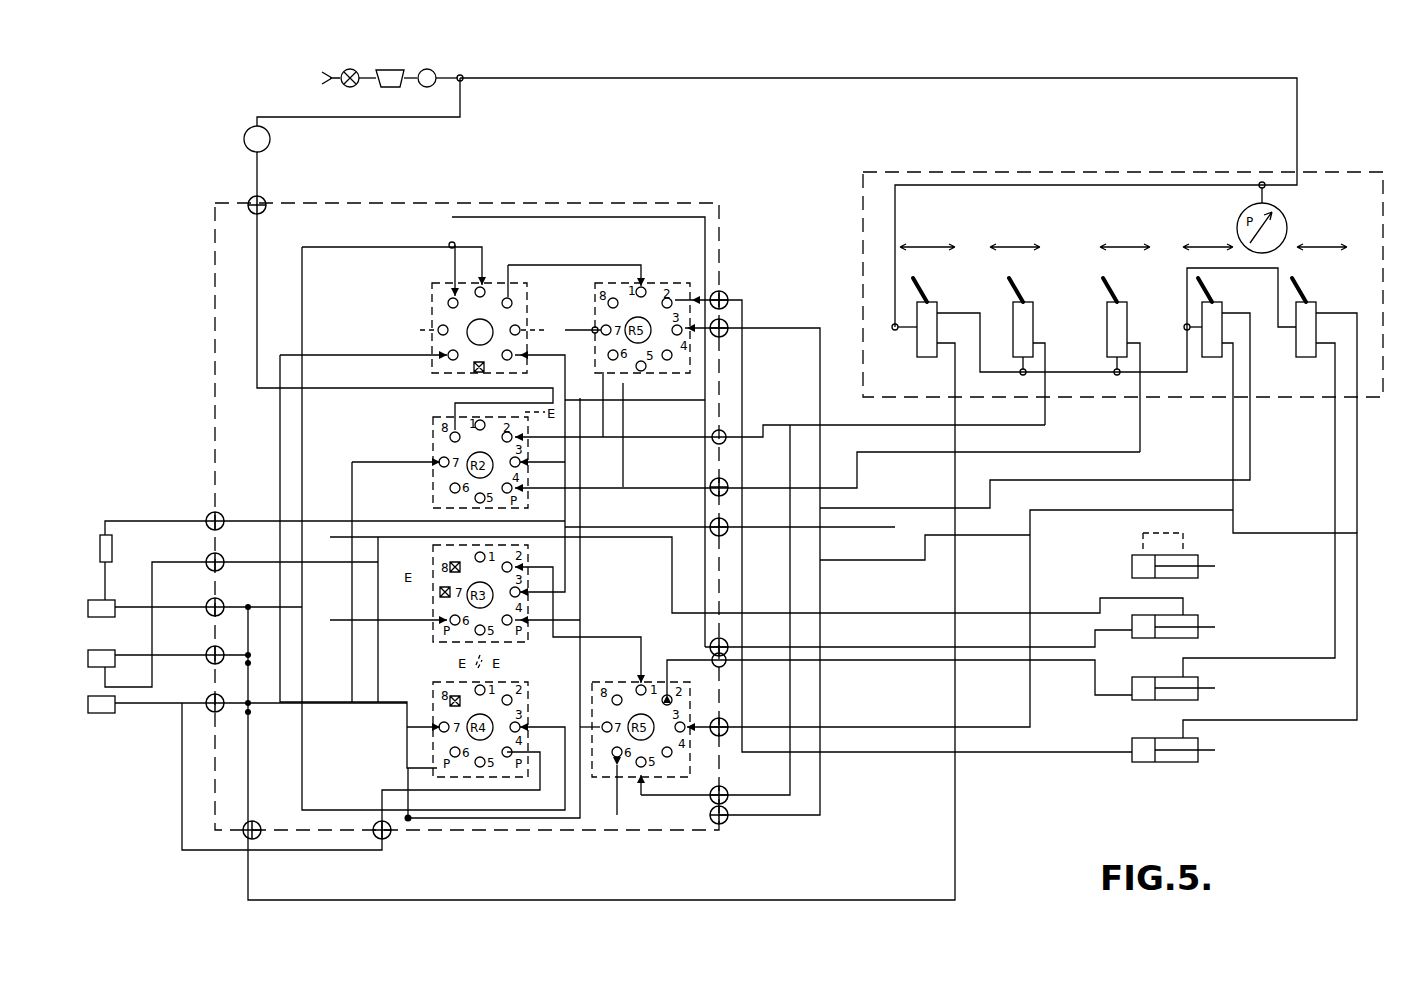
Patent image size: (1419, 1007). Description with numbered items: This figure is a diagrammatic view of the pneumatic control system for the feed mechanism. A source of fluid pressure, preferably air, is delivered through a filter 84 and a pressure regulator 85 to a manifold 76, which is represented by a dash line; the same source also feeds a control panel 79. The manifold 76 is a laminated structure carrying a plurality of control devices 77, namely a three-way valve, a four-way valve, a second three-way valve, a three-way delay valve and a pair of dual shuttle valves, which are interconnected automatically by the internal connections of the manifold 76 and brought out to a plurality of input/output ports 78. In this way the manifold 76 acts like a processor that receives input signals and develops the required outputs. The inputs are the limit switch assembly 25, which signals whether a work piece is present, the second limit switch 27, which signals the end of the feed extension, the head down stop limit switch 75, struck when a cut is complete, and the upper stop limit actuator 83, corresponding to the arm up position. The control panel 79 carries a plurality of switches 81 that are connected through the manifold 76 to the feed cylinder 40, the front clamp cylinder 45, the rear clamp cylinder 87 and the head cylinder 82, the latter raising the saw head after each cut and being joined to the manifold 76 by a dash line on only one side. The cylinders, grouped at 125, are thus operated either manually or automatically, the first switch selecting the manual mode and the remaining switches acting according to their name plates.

The filter 84 is at (402, 70).
The pressure regulator 85 is at (270, 139).
The input/output ports 78 is at (486, 513).
The manifold 76 is at (504, 203).
The control devices 77 is at (514, 263).
The control panel 79 is at (1383, 245).
The switches 81 is at (1326, 296).
The actuator cylinders 125 is at (1069, 538).
The head cylinder 82 is at (1190, 555).
The feed cylinder 40 is at (1192, 613).
The front clamp cylinder 45 is at (1168, 677).
The rear clamp cylinder 87 is at (1167, 764).
The limit switch assembly 25 is at (112, 548).
The upper stop limit actuator 83 is at (107, 600).
The head down stop limit switch 75 is at (103, 650).
The second limit switch 27 is at (108, 713).